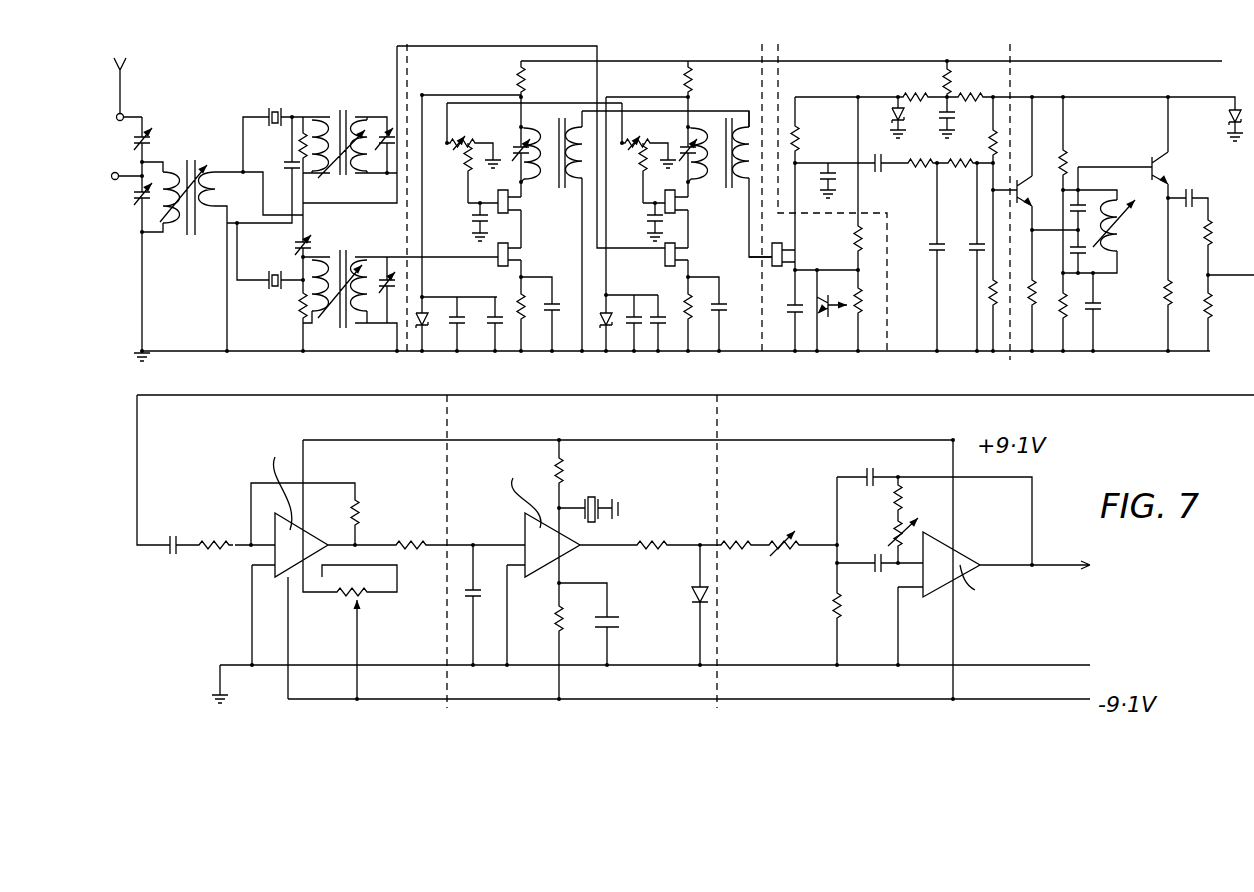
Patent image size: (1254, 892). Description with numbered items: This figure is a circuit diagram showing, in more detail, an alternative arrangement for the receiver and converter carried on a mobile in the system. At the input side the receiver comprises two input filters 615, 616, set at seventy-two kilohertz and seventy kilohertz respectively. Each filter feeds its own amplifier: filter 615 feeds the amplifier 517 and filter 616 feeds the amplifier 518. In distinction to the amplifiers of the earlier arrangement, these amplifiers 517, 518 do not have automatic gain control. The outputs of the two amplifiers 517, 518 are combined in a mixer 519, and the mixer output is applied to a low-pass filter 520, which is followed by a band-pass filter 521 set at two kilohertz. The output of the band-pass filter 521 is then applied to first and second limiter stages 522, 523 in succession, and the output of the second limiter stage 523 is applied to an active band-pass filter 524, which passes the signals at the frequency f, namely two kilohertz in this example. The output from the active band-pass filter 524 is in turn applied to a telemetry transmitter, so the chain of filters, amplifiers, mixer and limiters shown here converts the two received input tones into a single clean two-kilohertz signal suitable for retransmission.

The input filter 615 is at (278, 99).
The input filter 616 is at (272, 301).
The amplifier 517 is at (732, 228).
The amplifier 518 is at (522, 202).
The mixer 519 is at (786, 318).
The low-pass filter 520 is at (904, 57).
The band-pass filter 521 is at (1134, 58).
The first limiter stage 522 is at (342, 678).
The second limiter stage 523 is at (587, 680).
The active band-pass filter 524 is at (849, 682).